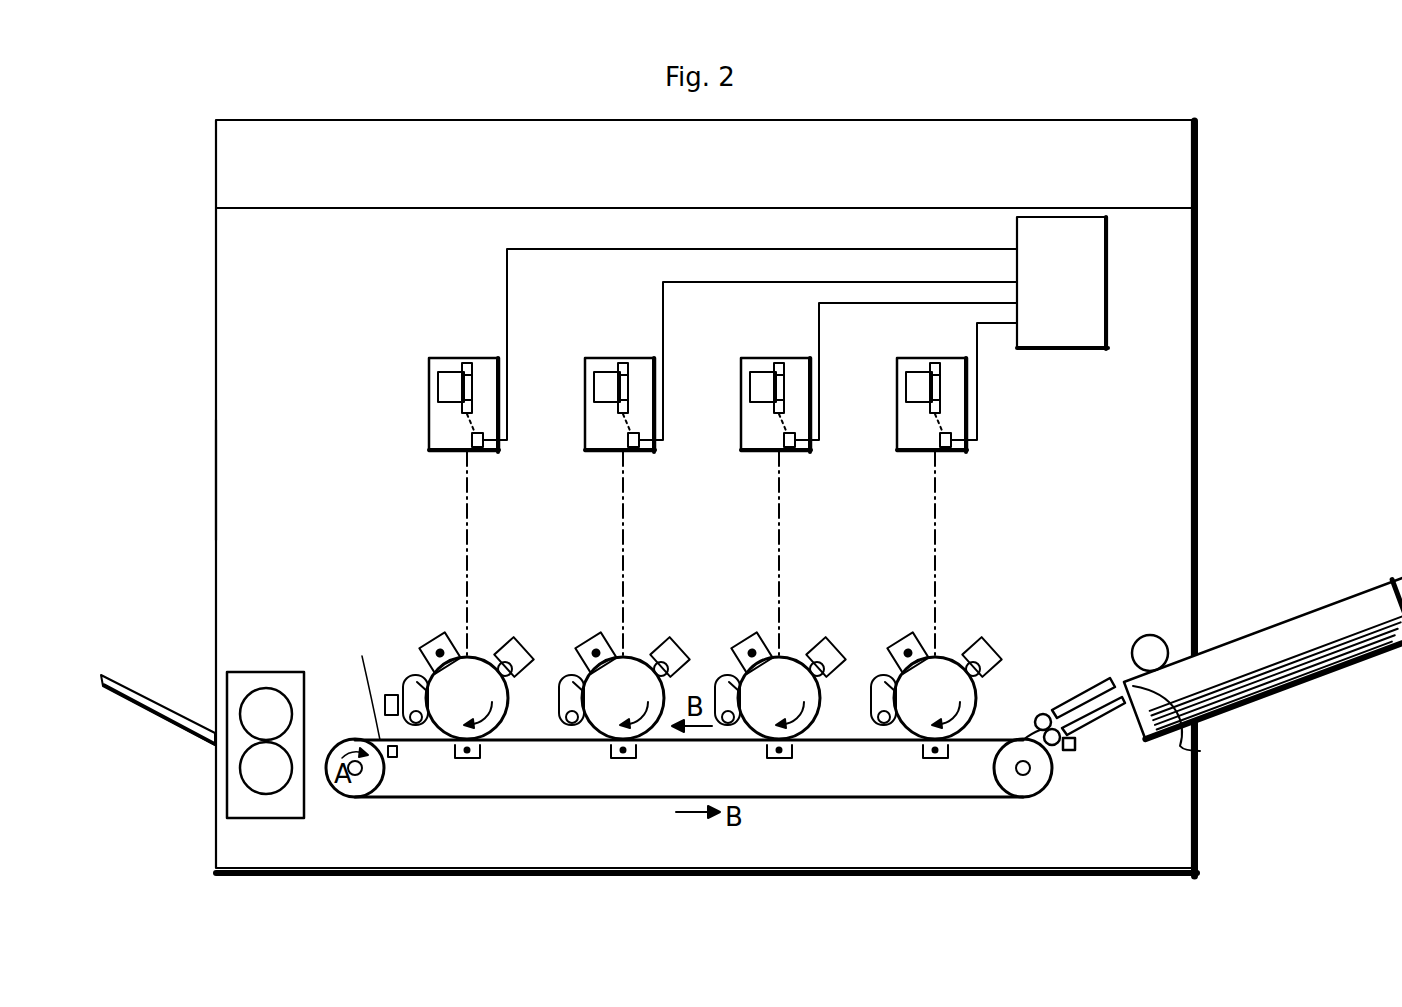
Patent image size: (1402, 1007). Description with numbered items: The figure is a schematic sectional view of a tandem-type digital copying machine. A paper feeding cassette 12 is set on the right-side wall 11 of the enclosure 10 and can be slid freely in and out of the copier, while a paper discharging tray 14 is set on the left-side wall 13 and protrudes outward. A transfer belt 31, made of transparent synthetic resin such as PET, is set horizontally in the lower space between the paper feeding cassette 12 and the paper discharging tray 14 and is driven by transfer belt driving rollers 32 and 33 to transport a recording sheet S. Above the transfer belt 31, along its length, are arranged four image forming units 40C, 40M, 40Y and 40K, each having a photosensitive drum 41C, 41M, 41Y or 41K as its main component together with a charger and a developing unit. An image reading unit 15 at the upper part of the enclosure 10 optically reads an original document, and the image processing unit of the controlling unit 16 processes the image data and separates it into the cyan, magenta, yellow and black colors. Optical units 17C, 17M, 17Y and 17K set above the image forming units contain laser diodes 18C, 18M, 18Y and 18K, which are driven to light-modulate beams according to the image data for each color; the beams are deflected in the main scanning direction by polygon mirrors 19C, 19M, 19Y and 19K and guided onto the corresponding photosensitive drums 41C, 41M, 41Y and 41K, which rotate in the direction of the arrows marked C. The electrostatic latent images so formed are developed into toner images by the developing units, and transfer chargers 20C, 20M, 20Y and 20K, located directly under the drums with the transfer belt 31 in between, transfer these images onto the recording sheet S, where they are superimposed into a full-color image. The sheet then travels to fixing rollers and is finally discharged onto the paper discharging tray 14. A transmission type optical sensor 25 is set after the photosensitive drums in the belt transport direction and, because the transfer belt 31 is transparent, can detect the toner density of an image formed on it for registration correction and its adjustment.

The enclosure 10 is at (1010, 102).
The right-side wall 11 is at (1199, 402).
The paper feeding cassette 12 is at (1306, 612).
The left-side wall 13 is at (215, 480).
The paper discharging tray 14 is at (176, 722).
The image reading unit 15 is at (1202, 182).
The controlling unit 16 is at (1108, 290).
The optical unit 17K is at (500, 446).
The optical unit 17Y is at (655, 446).
The optical unit 17M is at (814, 446).
The optical unit 17C is at (968, 446).
The laser diode 18K is at (498, 452).
The laser diode 18Y is at (671, 453).
The laser diode 18M is at (831, 453).
The laser diode 18C is at (984, 453).
The polygon mirror 19K is at (473, 369).
The polygon mirror 19Y is at (659, 380).
The polygon mirror 19M is at (819, 380).
The polygon mirror 19C is at (972, 380).
The transfer charger 20K is at (468, 760).
The transfer charger 20Y is at (626, 797).
The transfer charger 20M is at (795, 797).
The transfer charger 20C is at (985, 800).
The transmission type optical sensor 25 is at (386, 698).
The transfer belt 31 is at (712, 742).
The transfer belt driving roller 32 is at (350, 798).
The transfer belt driving roller 33 is at (1040, 786).
The image forming unit 40K is at (468, 595).
The image forming unit 40Y is at (624, 595).
The image forming unit 40M is at (781, 595).
The image forming unit 40C is at (936, 595).
The photosensitive drum 41K is at (467, 698).
The photosensitive drum 41Y is at (623, 698).
The photosensitive drum 41M is at (779, 698).
The photosensitive drum 41C is at (935, 698).
The recording sheet S is at (1177, 727).